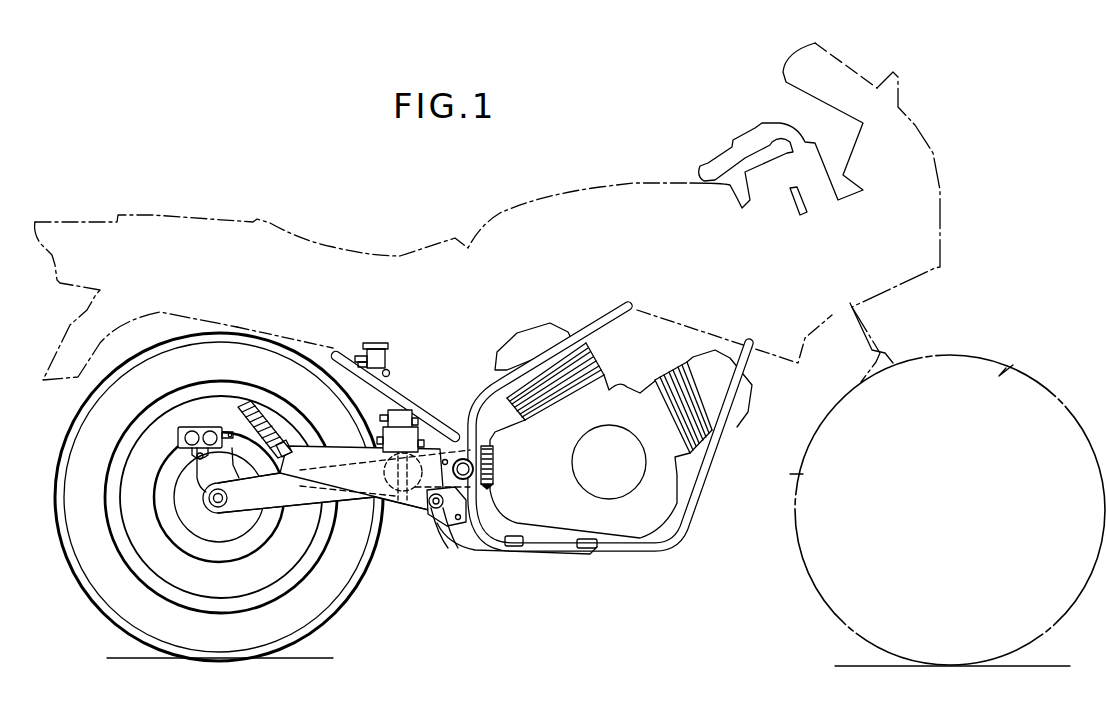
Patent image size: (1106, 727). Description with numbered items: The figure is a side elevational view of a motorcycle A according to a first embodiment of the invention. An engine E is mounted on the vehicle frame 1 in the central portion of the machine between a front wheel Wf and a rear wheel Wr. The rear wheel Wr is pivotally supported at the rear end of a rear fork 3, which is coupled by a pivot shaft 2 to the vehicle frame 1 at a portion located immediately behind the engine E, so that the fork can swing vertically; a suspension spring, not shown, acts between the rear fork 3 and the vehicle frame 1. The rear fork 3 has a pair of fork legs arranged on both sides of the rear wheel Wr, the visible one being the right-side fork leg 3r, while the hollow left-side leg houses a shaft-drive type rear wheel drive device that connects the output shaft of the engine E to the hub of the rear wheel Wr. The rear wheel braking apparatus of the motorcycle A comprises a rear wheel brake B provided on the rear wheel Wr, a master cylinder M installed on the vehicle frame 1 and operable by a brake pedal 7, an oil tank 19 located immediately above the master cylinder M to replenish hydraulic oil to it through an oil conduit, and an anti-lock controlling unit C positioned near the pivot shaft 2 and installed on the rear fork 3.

The motorcycle A is at (563, 158).
The vehicle frame 1 is at (489, 385).
The pivot shaft 2 is at (494, 466).
The rear fork 3 is at (348, 506).
The right-side fork leg 3r is at (300, 497).
The brake pedal 7 is at (547, 553).
The oil tank 19 is at (377, 343).
The rear wheel brake B is at (174, 438).
The anti-lock controlling unit C is at (392, 477).
The engine E is at (646, 336).
The master cylinder M is at (398, 412).
The rear wheel Wr is at (327, 616).
The front wheel Wf is at (838, 620).